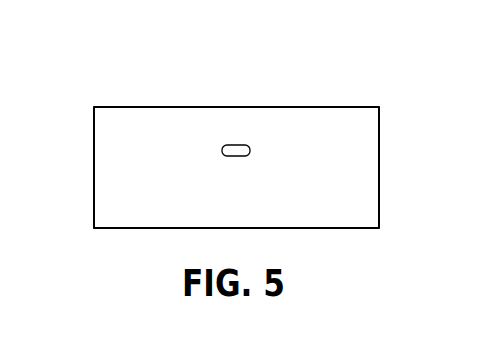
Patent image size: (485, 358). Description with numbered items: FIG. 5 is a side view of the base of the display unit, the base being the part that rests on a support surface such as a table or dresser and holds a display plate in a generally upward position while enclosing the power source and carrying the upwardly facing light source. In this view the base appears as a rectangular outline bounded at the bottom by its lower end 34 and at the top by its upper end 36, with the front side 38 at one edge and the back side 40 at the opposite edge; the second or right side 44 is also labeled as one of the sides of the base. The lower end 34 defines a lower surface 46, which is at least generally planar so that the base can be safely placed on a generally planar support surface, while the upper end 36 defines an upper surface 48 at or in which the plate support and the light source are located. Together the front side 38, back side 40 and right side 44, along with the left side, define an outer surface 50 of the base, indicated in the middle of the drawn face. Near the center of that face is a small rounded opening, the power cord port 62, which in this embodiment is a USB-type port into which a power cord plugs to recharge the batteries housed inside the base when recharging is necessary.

The lower end 34 is at (75, 227).
The upper end 36 is at (82, 109).
The front side 38 is at (75, 166).
The back side 40 is at (393, 166).
The second or right side 44 is at (189, 204).
The lower surface 46 is at (320, 234).
The upper surface 48 is at (187, 97).
The outer surface 50 is at (147, 207).
The power cord port 62 is at (238, 148).